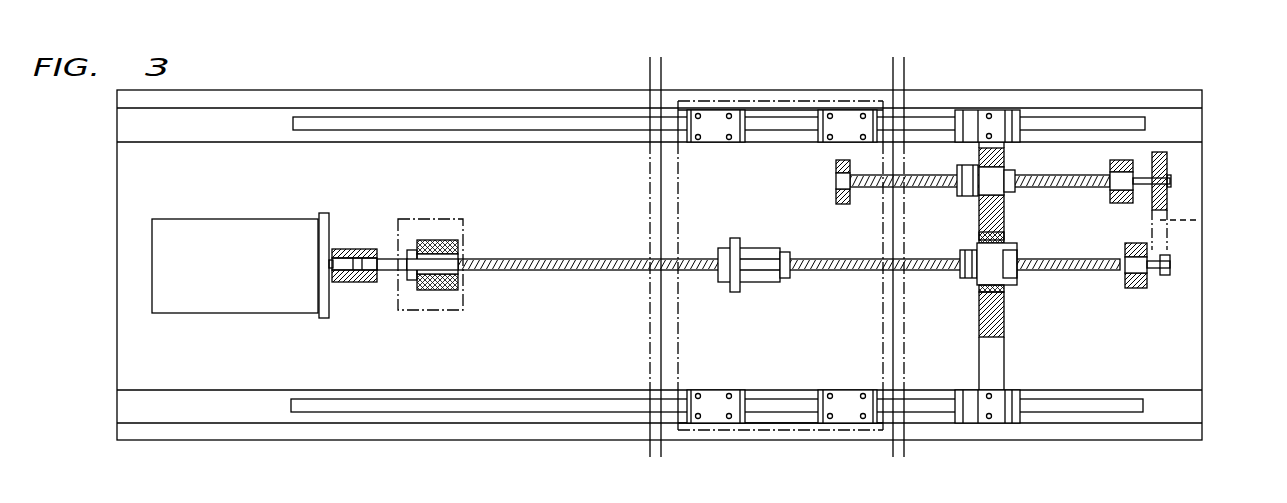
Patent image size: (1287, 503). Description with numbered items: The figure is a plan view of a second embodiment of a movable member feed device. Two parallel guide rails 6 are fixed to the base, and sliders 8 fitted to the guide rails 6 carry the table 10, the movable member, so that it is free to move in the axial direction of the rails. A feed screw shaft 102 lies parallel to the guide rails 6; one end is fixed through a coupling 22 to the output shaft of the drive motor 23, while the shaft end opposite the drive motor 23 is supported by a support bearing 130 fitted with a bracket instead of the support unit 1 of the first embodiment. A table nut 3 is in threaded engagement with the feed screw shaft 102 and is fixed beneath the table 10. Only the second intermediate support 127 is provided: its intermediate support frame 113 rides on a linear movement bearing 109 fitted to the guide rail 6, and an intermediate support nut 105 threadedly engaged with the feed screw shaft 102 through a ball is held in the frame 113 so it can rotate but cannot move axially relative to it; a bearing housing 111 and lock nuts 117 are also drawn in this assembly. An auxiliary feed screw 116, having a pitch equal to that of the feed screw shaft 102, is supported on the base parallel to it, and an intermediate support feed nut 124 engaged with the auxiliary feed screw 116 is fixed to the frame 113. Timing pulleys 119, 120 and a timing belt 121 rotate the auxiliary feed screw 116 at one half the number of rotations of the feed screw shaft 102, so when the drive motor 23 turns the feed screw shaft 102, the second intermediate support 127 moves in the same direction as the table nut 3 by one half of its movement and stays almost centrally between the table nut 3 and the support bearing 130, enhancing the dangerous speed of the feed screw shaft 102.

The support unit 1 is at (432, 293).
The table nut 3 is at (765, 270).
The guide rail 6 is at (1078, 120).
The slider 8 is at (714, 118).
The table 10 is at (765, 432).
The coupling 22 is at (358, 283).
The drive motor 23 is at (236, 304).
The feed screw shaft 102 is at (556, 272).
The intermediate support nut 105 is at (1012, 287).
The linear movement bearing 109 is at (962, 110).
The bearing housing 111 is at (1005, 233).
The intermediate support frame 113 is at (993, 353).
The auxiliary feed screw 116 is at (943, 188).
The lock nut 117 is at (838, 204).
The timing pulley 119 is at (1160, 285).
The timing pulley 120 is at (1170, 160).
The timing belt 121 is at (1200, 222).
The intermediate support feed nut 124 is at (996, 176).
The second intermediate support 127 is at (973, 328).
The support bearing 130 is at (1125, 286).